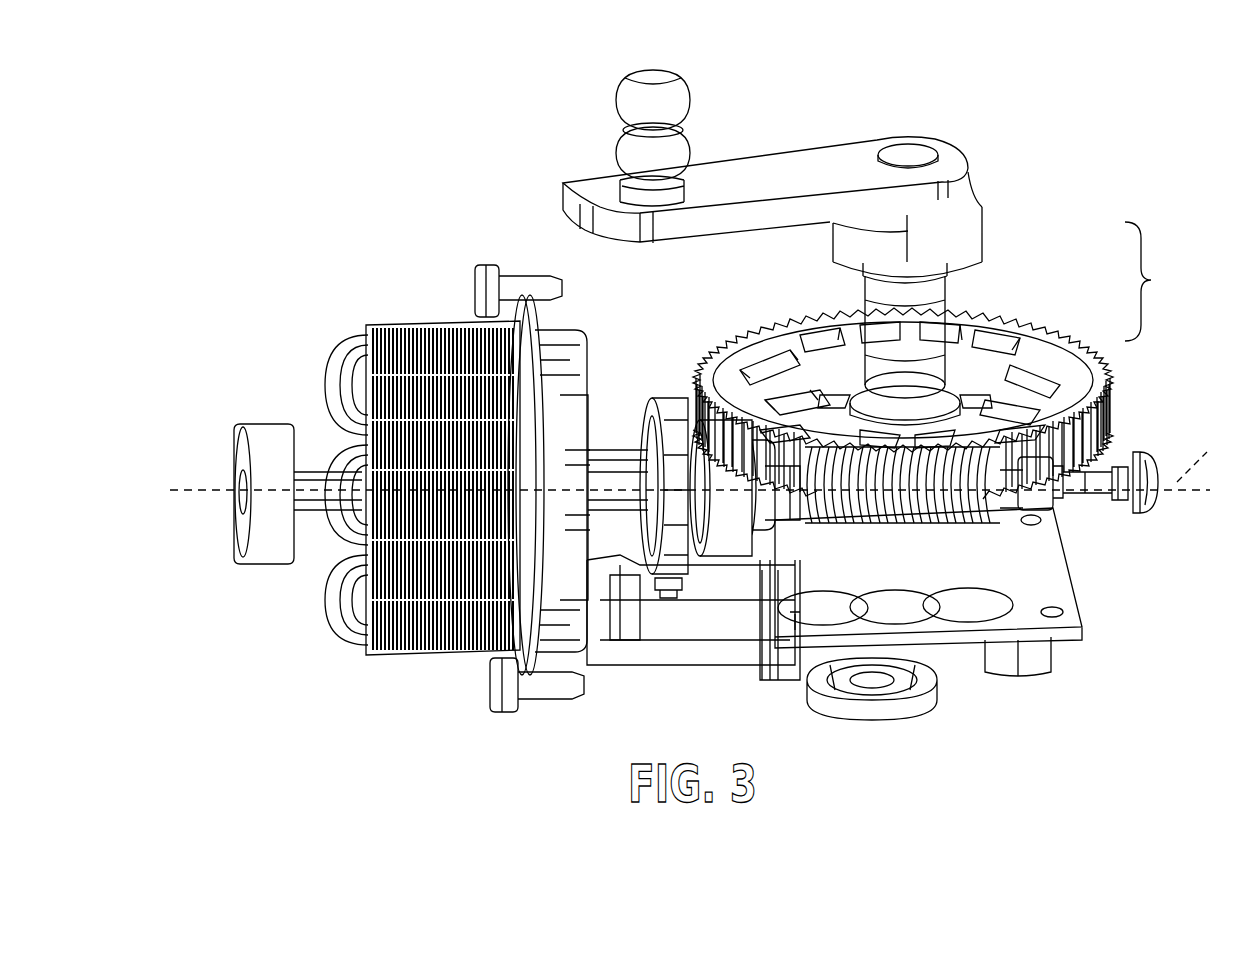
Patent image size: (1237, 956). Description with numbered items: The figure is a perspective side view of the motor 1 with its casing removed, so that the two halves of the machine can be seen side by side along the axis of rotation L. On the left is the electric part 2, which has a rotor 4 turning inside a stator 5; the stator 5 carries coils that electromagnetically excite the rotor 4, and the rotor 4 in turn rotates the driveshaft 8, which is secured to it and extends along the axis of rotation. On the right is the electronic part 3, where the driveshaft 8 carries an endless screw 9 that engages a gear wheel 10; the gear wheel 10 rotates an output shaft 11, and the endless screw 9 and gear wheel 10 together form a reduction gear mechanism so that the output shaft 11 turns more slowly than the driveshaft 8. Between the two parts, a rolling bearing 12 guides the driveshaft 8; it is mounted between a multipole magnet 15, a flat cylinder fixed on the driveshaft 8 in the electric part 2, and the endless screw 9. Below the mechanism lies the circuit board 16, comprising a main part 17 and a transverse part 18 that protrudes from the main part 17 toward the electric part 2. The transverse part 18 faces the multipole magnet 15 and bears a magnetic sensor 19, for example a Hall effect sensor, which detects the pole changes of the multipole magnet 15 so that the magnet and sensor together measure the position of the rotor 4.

The motor 1 is at (387, 282).
The electric part 2 is at (328, 368).
The electronic part 3 is at (1000, 302).
The rotor 4 is at (426, 322).
The stator 5 is at (372, 323).
The driveshaft 8 is at (606, 470).
The endless screw 9 is at (1048, 418).
The gear wheel 10 is at (1035, 335).
The output shaft 11 is at (888, 303).
The rolling bearing 12 is at (725, 445).
The multipole magnet 15 is at (670, 432).
The circuit board 16 is at (1030, 572).
The main part 17 is at (1058, 558).
The transverse part 18 is at (725, 592).
The magnetic sensor 19 is at (668, 592).